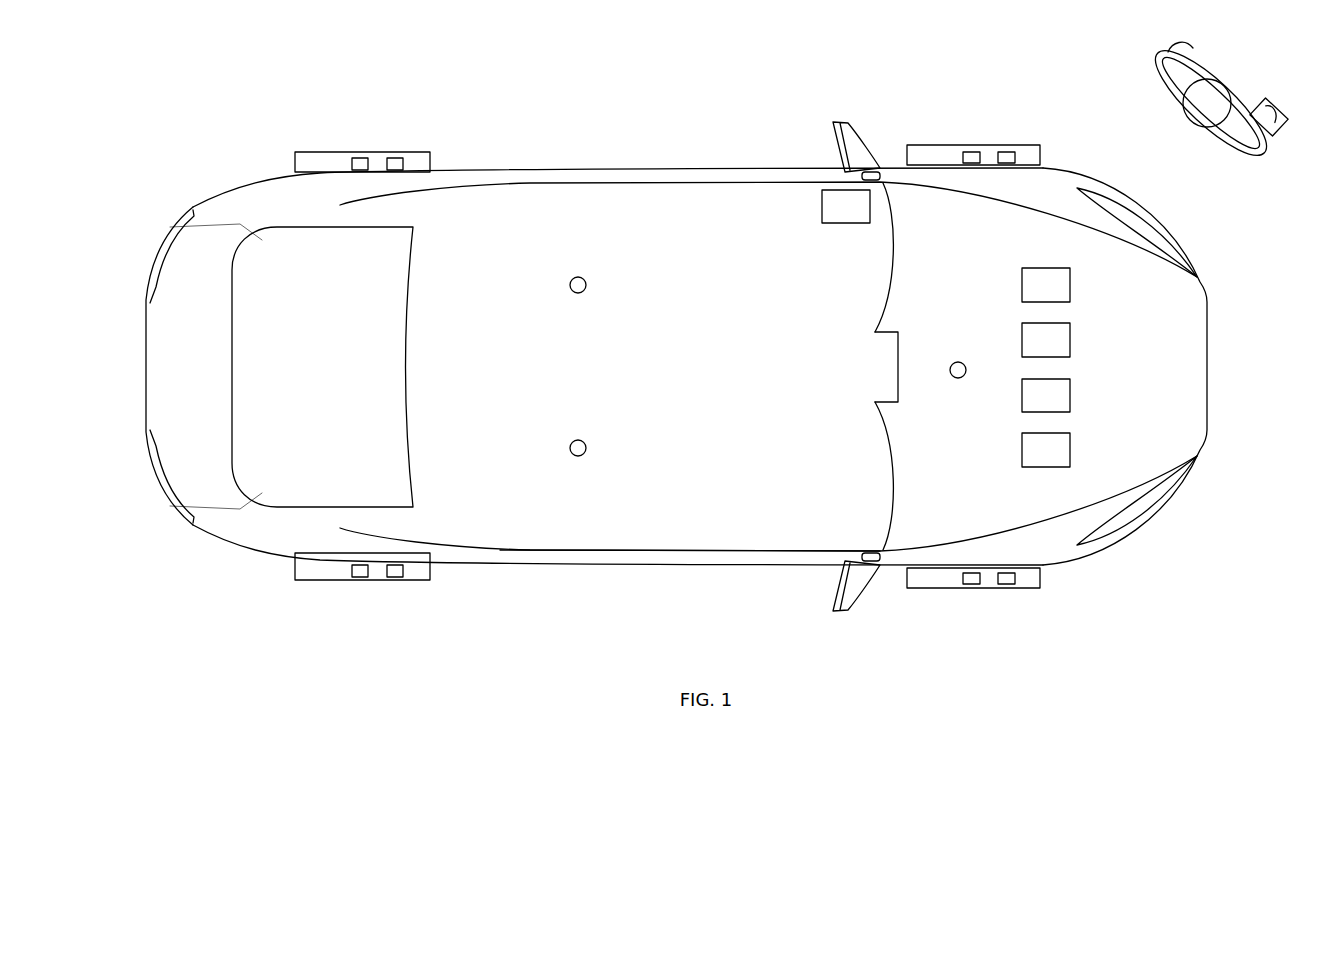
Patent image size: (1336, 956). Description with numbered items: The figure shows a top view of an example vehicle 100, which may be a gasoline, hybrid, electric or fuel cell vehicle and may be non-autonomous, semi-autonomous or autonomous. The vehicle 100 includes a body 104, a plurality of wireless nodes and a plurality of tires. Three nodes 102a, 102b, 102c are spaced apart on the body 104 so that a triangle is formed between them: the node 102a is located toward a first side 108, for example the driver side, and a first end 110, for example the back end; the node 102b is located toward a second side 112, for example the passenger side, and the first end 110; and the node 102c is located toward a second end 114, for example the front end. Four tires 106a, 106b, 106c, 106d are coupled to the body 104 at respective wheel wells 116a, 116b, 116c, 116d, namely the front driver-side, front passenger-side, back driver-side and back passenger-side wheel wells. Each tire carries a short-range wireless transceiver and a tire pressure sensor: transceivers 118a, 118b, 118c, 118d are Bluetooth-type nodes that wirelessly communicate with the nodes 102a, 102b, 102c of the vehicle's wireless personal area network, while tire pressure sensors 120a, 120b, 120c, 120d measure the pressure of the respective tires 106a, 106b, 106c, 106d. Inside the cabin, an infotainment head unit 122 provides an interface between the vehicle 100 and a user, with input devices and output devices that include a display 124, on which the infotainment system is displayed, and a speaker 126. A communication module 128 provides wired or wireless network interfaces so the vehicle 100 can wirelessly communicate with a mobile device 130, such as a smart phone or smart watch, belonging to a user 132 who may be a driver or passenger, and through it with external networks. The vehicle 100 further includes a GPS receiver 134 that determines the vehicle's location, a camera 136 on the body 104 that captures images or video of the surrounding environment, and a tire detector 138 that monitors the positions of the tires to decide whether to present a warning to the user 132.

The vehicle 100 is at (200, 138).
The node 102a is at (580, 276).
The node 102b is at (580, 457).
The node 102c is at (959, 379).
The body 104 is at (622, 533).
The tire 106a is at (932, 145).
The tire 106b is at (932, 588).
The tire 106c is at (322, 152).
The tire 106d is at (322, 580).
The first side 108 is at (653, 167).
The first end 110 is at (144, 367).
The second side 112 is at (712, 568).
The second end 114 is at (1208, 368).
The wheel well 116a is at (993, 125).
The wheel well 116b is at (996, 610).
The wheel well 116c is at (383, 131).
The wheel well 116d is at (384, 598).
The transceiver 118a is at (968, 152).
The transceiver 118b is at (968, 588).
The transceiver 118c is at (358, 158).
The transceiver 118d is at (358, 578).
The tire pressure sensor 120a is at (1005, 152).
The tire pressure sensor 120b is at (1005, 588).
The tire pressure sensor 120c is at (395, 158).
The tire pressure sensor 120d is at (395, 578).
The infotainment head unit 122 is at (816, 371).
The display 124 is at (873, 378).
The speaker 126 is at (846, 206).
The communication module 128 is at (1046, 285).
The mobile device 130 is at (1221, 103).
The user 132 is at (1220, 143).
The GPS receiver 134 is at (1046, 340).
The camera 136 is at (1046, 395).
The tire detector 138 is at (1046, 450).